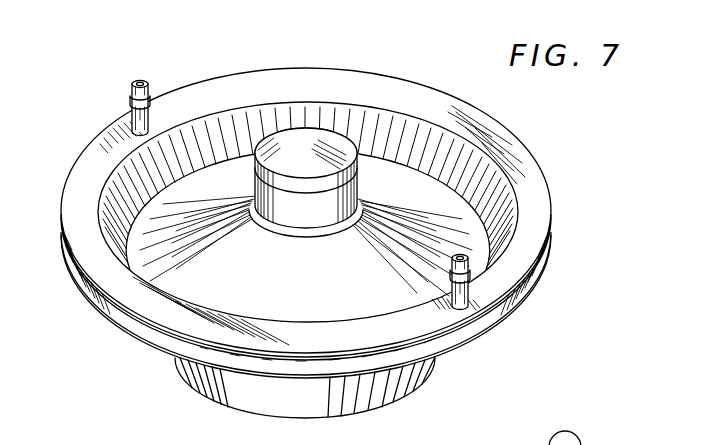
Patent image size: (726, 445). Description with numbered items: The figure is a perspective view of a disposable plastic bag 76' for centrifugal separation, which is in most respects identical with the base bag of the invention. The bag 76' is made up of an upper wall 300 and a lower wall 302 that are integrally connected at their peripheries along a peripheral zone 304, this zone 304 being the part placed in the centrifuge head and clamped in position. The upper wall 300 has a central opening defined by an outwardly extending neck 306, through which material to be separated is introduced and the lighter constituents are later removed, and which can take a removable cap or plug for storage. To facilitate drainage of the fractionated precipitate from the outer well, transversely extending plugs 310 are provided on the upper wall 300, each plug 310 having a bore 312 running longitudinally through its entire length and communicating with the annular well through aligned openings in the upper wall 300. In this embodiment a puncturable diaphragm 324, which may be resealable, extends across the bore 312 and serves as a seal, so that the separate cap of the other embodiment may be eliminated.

The bag 76' is at (306, 194).
The upper wall 300 is at (395, 163).
The lower wall 302 is at (206, 394).
The peripheral zone 304 is at (102, 276).
The neck 306 is at (258, 192).
The plug 310 is at (132, 106).
The bore 312 is at (471, 289).
The puncturable diaphragm 324 is at (131, 118).